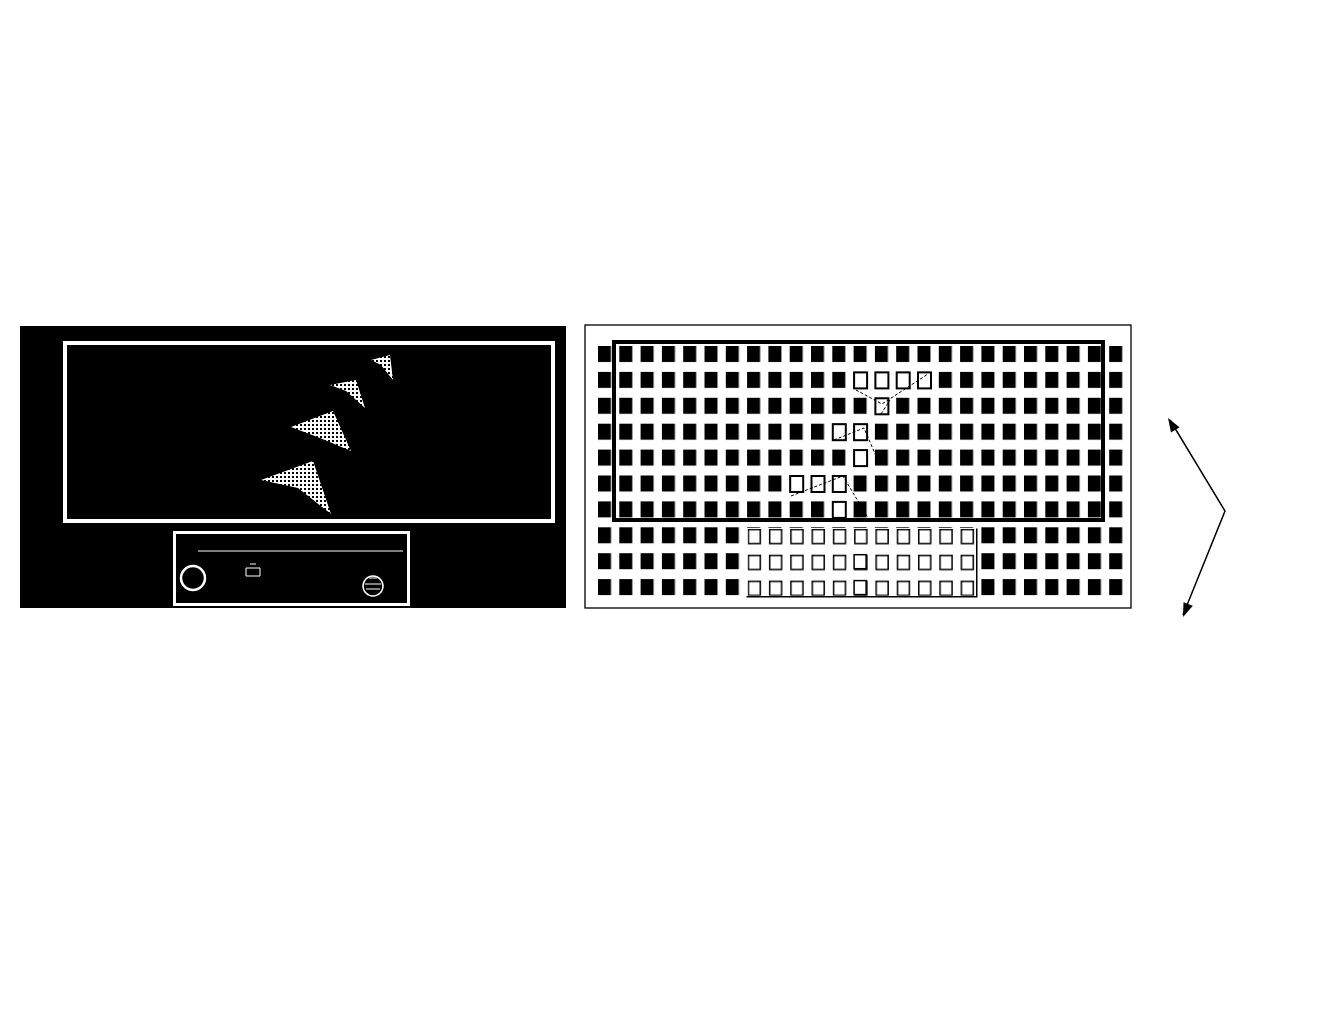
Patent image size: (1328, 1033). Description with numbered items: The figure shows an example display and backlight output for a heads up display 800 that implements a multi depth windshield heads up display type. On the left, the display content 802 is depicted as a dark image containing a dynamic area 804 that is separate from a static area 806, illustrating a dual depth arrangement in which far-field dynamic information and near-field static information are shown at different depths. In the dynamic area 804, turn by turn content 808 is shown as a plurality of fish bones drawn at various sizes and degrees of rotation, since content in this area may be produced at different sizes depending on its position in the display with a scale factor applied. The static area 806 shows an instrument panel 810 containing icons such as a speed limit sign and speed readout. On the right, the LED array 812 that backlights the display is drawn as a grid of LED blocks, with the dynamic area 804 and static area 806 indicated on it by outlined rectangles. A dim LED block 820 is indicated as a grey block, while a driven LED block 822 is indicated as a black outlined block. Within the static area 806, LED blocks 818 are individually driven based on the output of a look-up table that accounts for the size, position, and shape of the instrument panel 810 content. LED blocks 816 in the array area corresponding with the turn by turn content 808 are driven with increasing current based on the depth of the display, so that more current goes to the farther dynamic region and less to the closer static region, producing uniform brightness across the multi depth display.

The heads up display 800 is at (1247, 88).
The display content 802 is at (310, 318).
The dynamic area 804 is at (103, 333).
The static area 806 is at (198, 600).
The turn by turn content 808 is at (404, 347).
The instrument panel 810 is at (392, 562).
The LED array 812 is at (870, 333).
The LED blocks 816 is at (927, 358).
The LED blocks 818 is at (870, 590).
The dim LED block 820 is at (1107, 550).
The driven LED block 822 is at (855, 570).